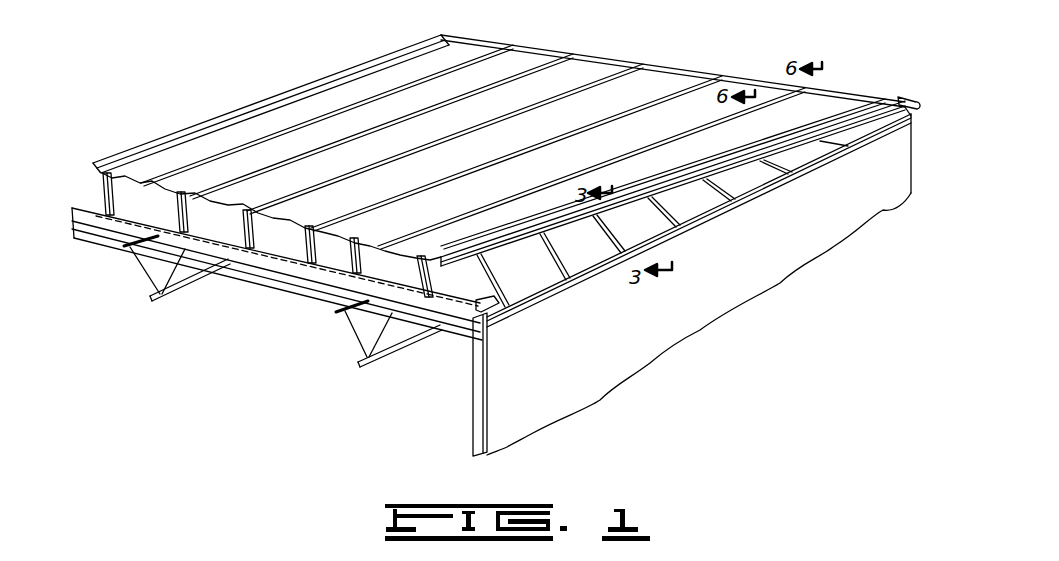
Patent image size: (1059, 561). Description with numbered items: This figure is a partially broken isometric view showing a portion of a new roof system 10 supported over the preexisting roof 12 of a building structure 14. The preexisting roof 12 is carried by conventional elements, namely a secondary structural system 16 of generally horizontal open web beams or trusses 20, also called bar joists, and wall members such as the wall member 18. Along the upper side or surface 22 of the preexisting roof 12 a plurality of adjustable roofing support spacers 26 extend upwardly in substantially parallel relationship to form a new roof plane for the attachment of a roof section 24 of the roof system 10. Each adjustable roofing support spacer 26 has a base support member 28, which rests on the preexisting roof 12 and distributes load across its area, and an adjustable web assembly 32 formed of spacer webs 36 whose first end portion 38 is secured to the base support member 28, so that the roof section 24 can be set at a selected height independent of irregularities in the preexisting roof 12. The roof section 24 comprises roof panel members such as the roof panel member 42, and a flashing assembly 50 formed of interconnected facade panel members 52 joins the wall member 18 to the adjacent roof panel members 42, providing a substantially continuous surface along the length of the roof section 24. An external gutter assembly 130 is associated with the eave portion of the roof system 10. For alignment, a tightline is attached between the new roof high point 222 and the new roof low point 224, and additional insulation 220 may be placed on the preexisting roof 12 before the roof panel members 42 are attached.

The new roof system 10 is at (332, 66).
The preexisting roof 12 is at (456, 320).
The building structure 14 is at (918, 178).
The secondary structural system 16 is at (167, 306).
The wall member 18 is at (612, 341).
The open web beams or trusses 20 is at (206, 284).
The upper side or surface of the preexisting roof 22 is at (282, 266).
The roof section 24 is at (560, 48).
The adjustable roofing support spacer 26 is at (92, 178).
The base support member 28 is at (114, 203).
The adjustable web assembly 32 is at (184, 210).
The spacer webs 36 is at (118, 192).
The first end portion of the spacer web 38 is at (434, 270).
The roof panel member 42 is at (437, 147).
The flashing assembly 50 is at (650, 219).
The facade panel members 52 is at (538, 281).
The external gutter assembly 130 is at (909, 95).
The insulation 220 is at (490, 316).
The new roof high point 222 is at (440, 253).
The new roof low point 224 is at (918, 100).